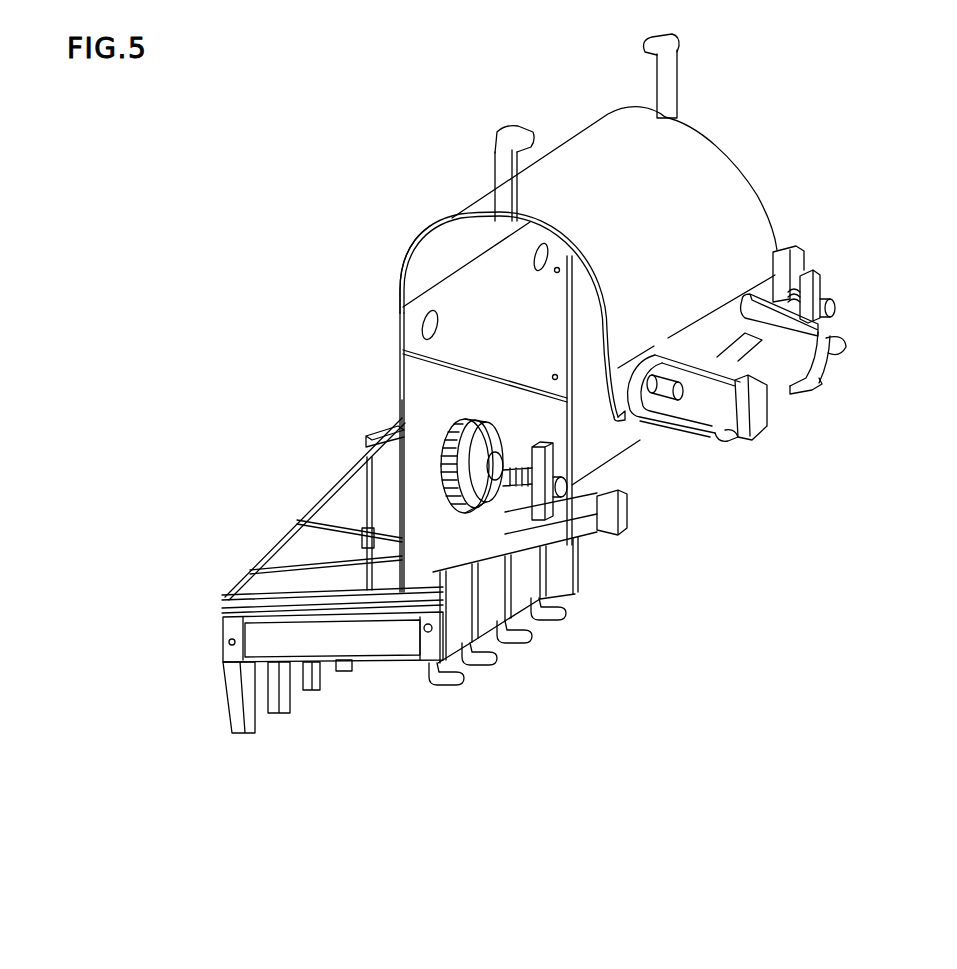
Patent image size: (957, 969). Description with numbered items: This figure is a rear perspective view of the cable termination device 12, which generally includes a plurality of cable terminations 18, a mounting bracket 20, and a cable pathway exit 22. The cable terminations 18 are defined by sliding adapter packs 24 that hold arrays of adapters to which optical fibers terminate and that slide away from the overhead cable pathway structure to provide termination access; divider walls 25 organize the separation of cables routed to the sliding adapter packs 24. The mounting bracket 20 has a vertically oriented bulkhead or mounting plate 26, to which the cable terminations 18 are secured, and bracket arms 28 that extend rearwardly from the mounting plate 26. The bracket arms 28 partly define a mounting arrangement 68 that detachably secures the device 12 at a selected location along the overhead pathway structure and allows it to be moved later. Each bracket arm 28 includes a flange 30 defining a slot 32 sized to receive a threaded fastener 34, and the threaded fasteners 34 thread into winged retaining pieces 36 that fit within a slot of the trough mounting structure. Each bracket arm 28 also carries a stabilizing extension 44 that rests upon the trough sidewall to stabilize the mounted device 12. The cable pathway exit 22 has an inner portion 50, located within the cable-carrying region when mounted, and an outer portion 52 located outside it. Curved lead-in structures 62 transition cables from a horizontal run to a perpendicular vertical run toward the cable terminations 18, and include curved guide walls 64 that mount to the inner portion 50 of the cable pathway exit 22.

The cable termination device 12 is at (263, 299).
The cable terminations 18 is at (332, 705).
The mounting bracket 20 is at (842, 222).
The cable pathway exit 22 is at (712, 150).
The sliding adapter packs 24 is at (205, 652).
The divider walls 25 is at (315, 493).
The mounting plate 26 is at (508, 316).
The bracket arms 28 is at (425, 390).
The flange 30 is at (550, 430).
The slot 32 is at (512, 497).
The threaded fasteners 34 is at (490, 482).
The winged retaining pieces 36 is at (547, 463).
The stabilizing extension 44 is at (613, 515).
The inner portion 50 is at (785, 272).
The outer portion 52 is at (398, 296).
The curved lead-in structures 62 is at (685, 362).
The curved guide walls 64 is at (673, 427).
The mounting arrangement 68 is at (575, 535).